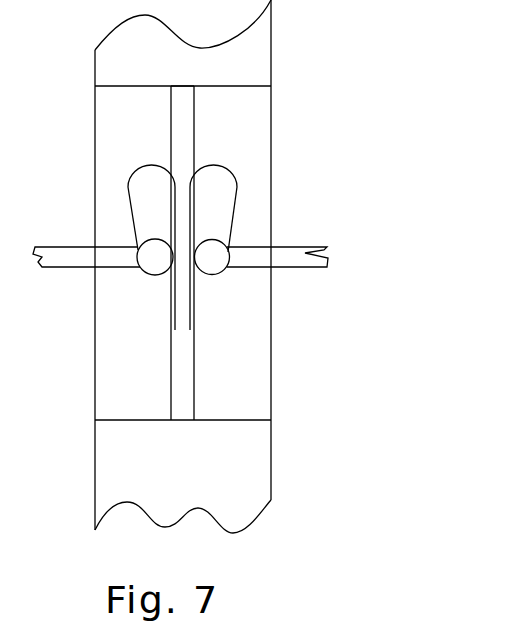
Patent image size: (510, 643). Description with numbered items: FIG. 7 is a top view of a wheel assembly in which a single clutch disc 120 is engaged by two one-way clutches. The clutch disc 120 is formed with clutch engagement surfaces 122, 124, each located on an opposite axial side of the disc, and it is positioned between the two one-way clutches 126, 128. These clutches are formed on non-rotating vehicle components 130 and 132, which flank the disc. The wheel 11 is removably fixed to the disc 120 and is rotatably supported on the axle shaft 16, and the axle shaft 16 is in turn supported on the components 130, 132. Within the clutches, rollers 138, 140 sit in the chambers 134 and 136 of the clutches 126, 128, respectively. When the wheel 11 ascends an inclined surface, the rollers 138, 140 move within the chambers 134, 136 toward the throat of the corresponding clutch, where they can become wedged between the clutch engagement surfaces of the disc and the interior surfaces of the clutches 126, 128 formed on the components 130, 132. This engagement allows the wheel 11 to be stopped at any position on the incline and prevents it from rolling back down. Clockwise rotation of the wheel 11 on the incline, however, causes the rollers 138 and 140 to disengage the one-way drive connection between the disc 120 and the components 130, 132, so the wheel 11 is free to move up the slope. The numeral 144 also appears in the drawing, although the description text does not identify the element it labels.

The wheel 11 is at (240, 488).
The axle shaft 16 is at (192, 248).
The clutch disc 120 is at (185, 367).
The clutch engagement surface 122 is at (195, 312).
The clutch engagement surface 124 is at (172, 312).
The one-way clutch 126 is at (220, 198).
The one-way clutch 128 is at (143, 187).
The non-rotating vehicle component 130 is at (233, 150).
The non-rotating vehicle component 132 is at (120, 152).
The chamber 134 is at (207, 218).
The chamber 136 is at (150, 218).
The roller 138 is at (210, 257).
The roller 140 is at (153, 258).
The beam end 144 is at (138, 248).